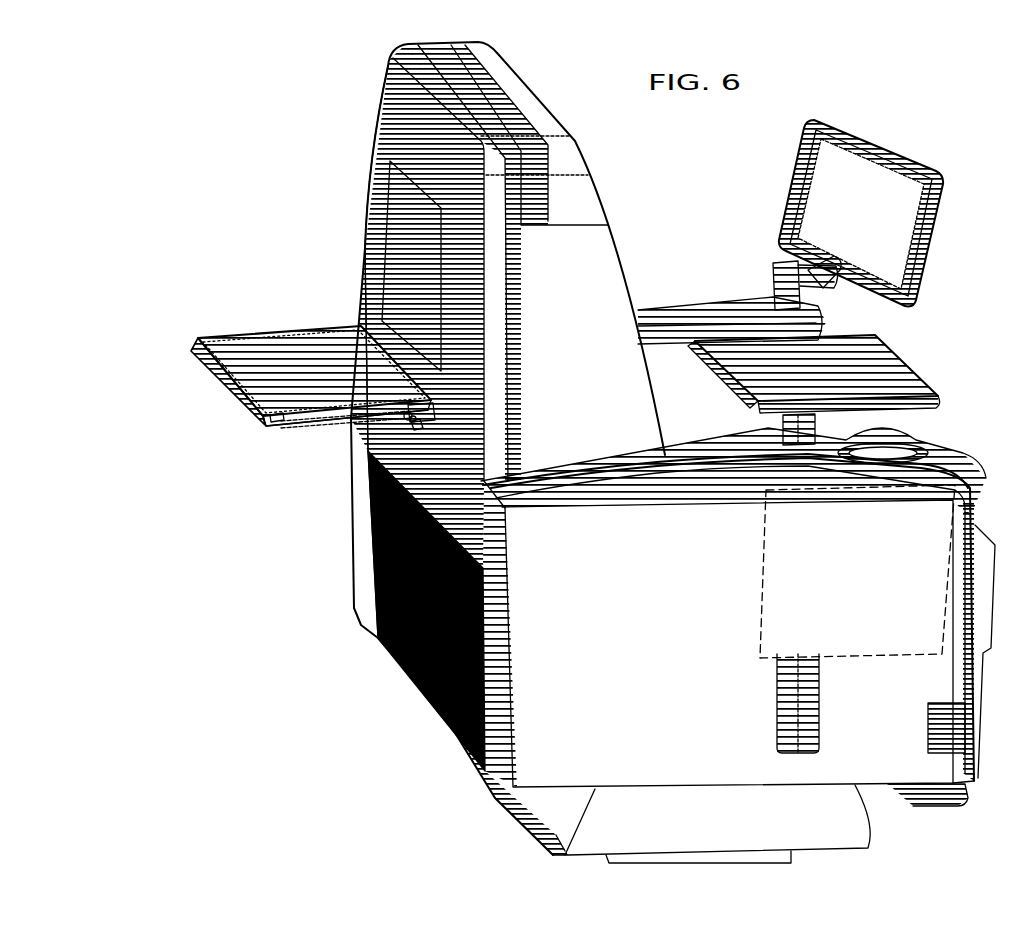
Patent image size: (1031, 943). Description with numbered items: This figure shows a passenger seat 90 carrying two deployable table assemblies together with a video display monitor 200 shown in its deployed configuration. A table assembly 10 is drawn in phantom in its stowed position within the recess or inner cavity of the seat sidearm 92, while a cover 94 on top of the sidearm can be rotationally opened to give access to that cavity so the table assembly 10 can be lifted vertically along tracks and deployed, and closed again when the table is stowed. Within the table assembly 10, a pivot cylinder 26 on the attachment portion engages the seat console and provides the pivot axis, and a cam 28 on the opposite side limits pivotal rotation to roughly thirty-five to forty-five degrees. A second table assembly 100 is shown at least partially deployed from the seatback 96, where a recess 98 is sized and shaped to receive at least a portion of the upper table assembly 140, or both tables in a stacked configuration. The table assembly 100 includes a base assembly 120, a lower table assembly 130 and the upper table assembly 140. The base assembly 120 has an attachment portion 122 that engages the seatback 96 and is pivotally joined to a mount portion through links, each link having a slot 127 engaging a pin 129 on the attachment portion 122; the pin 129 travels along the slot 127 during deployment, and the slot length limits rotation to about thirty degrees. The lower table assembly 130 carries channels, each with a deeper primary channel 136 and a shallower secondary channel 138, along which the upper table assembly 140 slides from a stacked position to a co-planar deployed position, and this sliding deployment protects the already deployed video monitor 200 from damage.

The table assembly 10 is at (910, 370).
The pivot cylinder 26 is at (766, 733).
The cam 28 is at (815, 733).
The passenger seat 90 is at (497, 55).
The seat sidearm 92 is at (969, 480).
The cover 94 is at (694, 465).
The seatback 96 is at (372, 110).
The recess 98 is at (392, 202).
The table assembly 100 is at (273, 325).
The upper table assembly 140 is at (300, 320).
The lower table assembly 130 is at (187, 347).
The secondary channel 138 is at (253, 417).
The primary channel 136 is at (273, 420).
The slot 127 is at (397, 407).
The pin 129 is at (403, 411).
The attachment portion 122 is at (422, 423).
The base assembly 120 is at (407, 413).
The video display monitor 200 is at (936, 181).